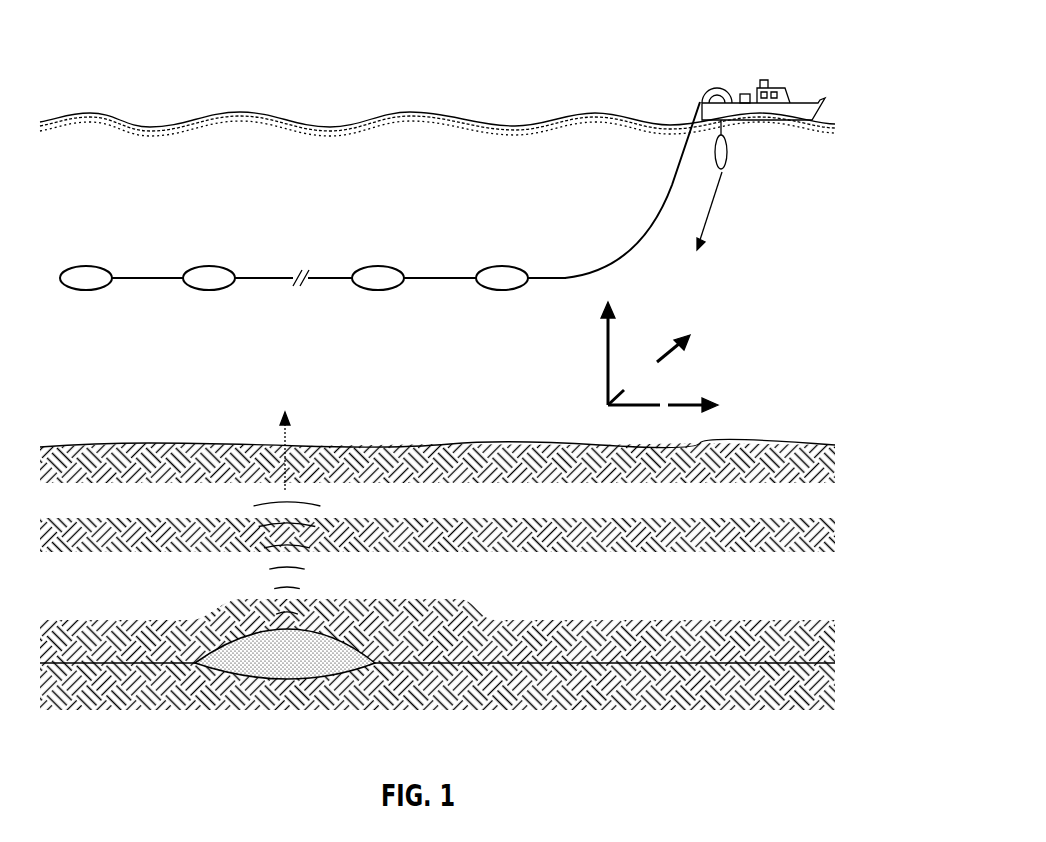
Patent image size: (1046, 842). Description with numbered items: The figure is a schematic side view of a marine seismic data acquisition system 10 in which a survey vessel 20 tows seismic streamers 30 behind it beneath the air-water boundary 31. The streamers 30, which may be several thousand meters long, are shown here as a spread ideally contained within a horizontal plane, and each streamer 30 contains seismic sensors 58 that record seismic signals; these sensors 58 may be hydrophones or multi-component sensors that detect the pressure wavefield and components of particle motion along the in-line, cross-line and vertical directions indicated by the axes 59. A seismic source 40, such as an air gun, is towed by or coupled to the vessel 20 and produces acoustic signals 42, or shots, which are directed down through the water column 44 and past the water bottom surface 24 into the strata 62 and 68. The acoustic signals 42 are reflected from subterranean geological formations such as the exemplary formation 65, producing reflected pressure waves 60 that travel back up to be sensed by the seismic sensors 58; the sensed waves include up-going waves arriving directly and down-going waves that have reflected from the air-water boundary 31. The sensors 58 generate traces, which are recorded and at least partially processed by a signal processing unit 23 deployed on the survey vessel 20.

The marine seismic data acquisition system 10 is at (233, 80).
The survey vessel 20 is at (811, 100).
The signal processing unit 23 is at (745, 93).
The water bottom surface 24 is at (725, 447).
The seismic streamer 30 is at (672, 192).
The air-water boundary 31 is at (388, 112).
The seismic source 40 is at (728, 152).
The acoustic signal 42 is at (714, 197).
The water column 44 is at (755, 305).
The seismic sensor 58 is at (83, 267).
The axes 59 is at (706, 369).
The pressure waves 60 is at (253, 575).
The strata 62 is at (445, 640).
The formation 65 is at (297, 669).
The strata 68 is at (445, 705).